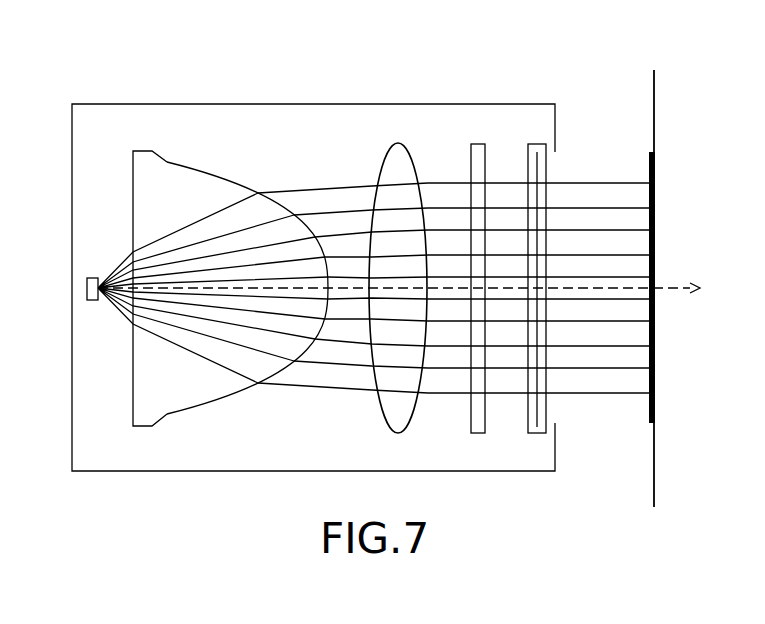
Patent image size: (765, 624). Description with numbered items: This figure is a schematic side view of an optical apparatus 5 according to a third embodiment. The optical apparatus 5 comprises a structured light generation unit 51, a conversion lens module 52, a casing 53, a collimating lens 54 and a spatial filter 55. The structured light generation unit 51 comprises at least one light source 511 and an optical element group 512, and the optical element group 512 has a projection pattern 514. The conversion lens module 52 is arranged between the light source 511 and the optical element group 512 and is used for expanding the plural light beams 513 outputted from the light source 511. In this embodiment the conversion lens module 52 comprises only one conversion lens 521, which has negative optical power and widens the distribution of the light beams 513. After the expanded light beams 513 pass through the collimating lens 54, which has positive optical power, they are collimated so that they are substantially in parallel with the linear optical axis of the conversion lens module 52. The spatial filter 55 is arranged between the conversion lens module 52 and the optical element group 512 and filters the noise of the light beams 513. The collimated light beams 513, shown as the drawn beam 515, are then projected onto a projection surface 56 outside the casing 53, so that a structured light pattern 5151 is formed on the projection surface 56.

The optical apparatus 5 is at (110, 49).
The structured light generation unit 51 is at (288, 10).
The light source 511 is at (93, 283).
The optical element group 512 is at (535, 156).
The light beams 513 is at (195, 335).
The projection pattern 514 is at (537, 400).
The light beam 515 is at (603, 183).
The structured light pattern 5151 is at (651, 418).
The conversion lens module 52 is at (206, 282).
The conversion lens 521 is at (228, 185).
The casing 53 is at (223, 117).
The collimating lens 54 is at (393, 168).
The spatial filter 55 is at (478, 172).
The projection surface 56 is at (656, 105).